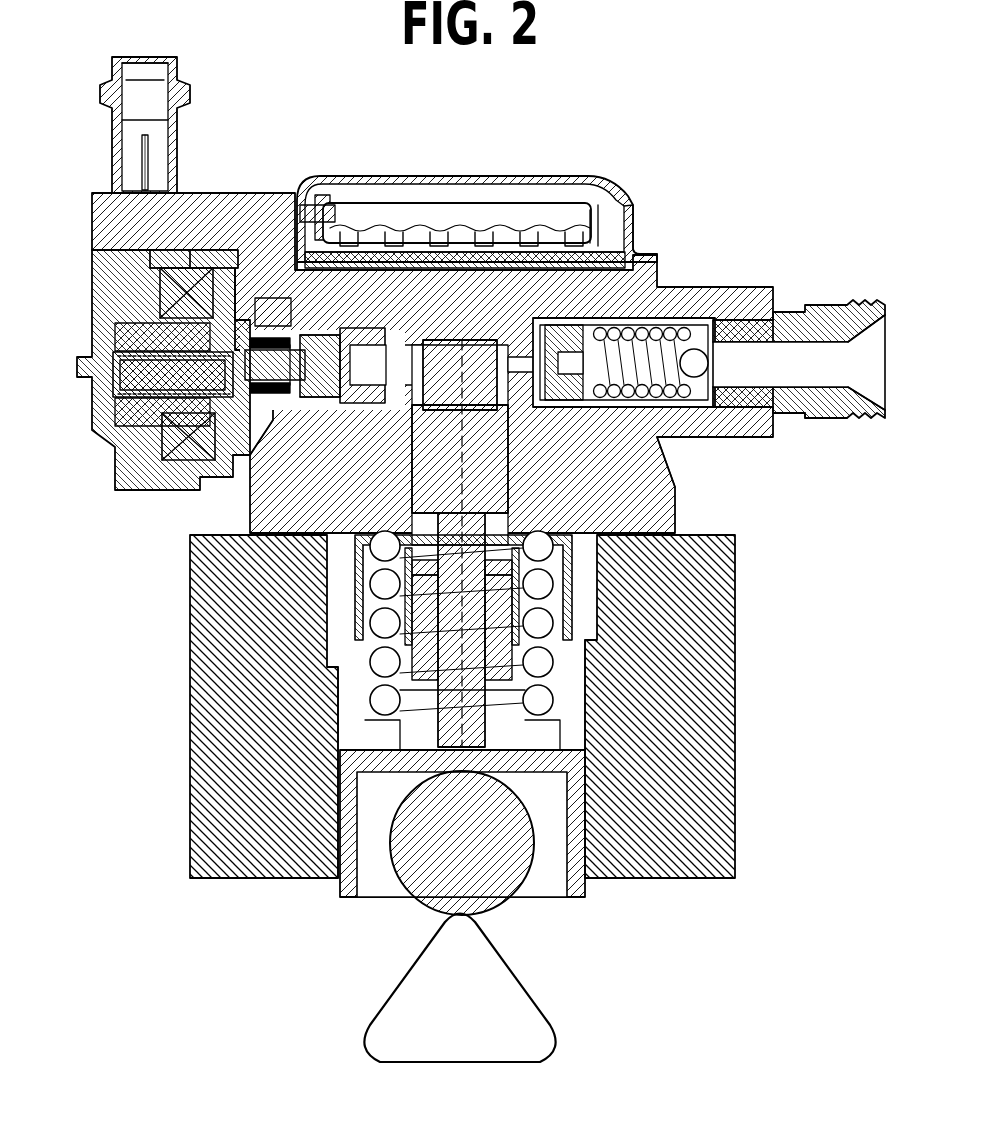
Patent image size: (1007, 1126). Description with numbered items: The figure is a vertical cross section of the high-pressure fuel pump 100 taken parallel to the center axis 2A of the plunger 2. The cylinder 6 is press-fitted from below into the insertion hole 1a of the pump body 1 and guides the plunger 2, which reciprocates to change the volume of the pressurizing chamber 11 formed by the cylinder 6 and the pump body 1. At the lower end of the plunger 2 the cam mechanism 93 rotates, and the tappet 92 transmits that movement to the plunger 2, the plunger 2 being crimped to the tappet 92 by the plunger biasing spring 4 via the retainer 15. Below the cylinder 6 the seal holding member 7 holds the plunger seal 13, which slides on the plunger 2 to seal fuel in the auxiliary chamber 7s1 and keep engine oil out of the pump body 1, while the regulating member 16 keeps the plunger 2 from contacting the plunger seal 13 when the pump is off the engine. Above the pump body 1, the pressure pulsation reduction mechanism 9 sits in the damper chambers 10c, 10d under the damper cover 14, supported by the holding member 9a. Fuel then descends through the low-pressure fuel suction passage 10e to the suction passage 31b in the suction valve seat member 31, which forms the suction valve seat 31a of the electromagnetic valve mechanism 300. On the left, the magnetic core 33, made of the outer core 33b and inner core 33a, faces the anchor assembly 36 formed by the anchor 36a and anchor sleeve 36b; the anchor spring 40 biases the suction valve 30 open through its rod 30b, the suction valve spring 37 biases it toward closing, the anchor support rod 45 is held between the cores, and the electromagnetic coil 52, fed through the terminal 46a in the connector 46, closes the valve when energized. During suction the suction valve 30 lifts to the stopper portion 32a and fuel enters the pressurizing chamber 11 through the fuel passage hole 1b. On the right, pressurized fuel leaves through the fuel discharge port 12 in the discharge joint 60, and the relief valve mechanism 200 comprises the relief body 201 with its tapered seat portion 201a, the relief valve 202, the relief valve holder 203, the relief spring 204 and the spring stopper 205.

The pump body 1 is at (645, 287).
The insertion hole 1a is at (400, 481).
The fuel passage hole 1b is at (408, 365).
The plunger 2 is at (500, 513).
The center axis 2A is at (462, 453).
The plunger biasing spring 4 is at (548, 698).
The cylinder 6 is at (395, 503).
The seal holding member 7 is at (527, 626).
The auxiliary chamber 7s1 is at (428, 586).
The pressure pulsation reduction mechanism 9 is at (488, 212).
The holding member 9a is at (628, 226).
The damper chamber 10c is at (543, 215).
The damper chamber 10d is at (562, 238).
The low-pressure fuel suction passage 10e is at (325, 228).
The pressurizing chamber 11 is at (443, 262).
The fuel discharge port 12 is at (877, 371).
The plunger seal 13 is at (515, 661).
The damper cover 14 is at (412, 175).
The retainer 15 is at (532, 750).
The regulating member 16 is at (548, 560).
The suction valve 30 is at (366, 330).
The rod 30b is at (300, 330).
The suction valve seat member 31 is at (308, 300).
The suction valve seat 31a is at (353, 290).
The suction passage 31b is at (300, 320).
The stopper portion 32a is at (252, 474).
The magnetic core 33 is at (47, 262).
The inner core 33a is at (137, 335).
The outer core 33b is at (104, 330).
The anchor assembly 36 is at (229, 195).
The anchor 36a is at (207, 266).
The anchor sleeve 36b is at (240, 285).
The suction valve spring 37 is at (265, 300).
The anchor spring 40 is at (173, 383).
The anchor support rod 45 is at (143, 368).
The connector 46 is at (180, 125).
The terminal 46a is at (143, 148).
The electromagnetic coil 52 is at (183, 290).
The discharge joint 60 is at (830, 420).
The tappet 92 is at (396, 765).
The cam mechanism 93 is at (396, 995).
The high-pressure fuel pump 100 is at (730, 160).
The relief valve mechanism 200 is at (888, 226).
The relief body 201 is at (702, 393).
The seat portion 201a is at (685, 438).
The relief valve 202 is at (710, 352).
The relief valve holder 203 is at (720, 337).
The relief spring 204 is at (685, 322).
The spring stopper 205 is at (660, 312).
The electromagnetic valve mechanism 300 is at (137, 344).